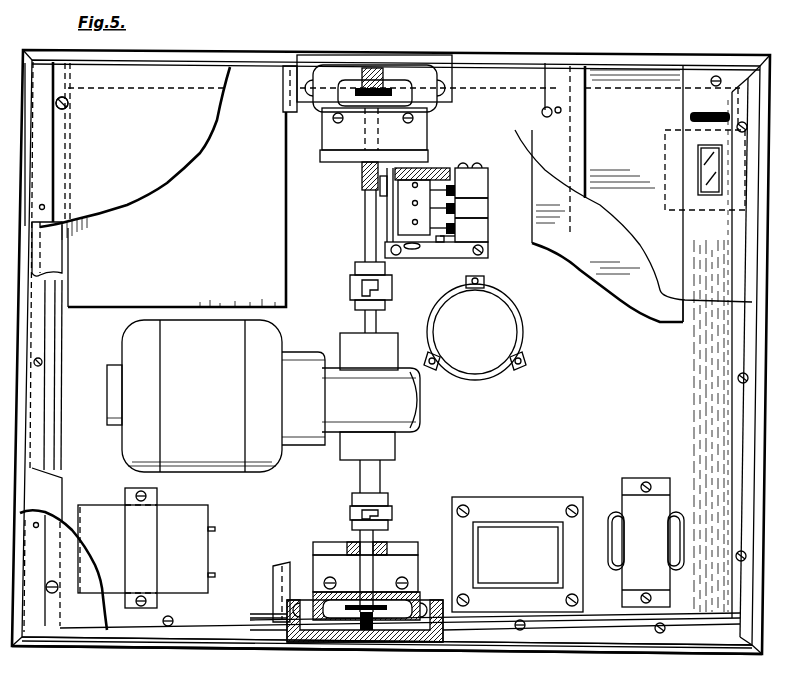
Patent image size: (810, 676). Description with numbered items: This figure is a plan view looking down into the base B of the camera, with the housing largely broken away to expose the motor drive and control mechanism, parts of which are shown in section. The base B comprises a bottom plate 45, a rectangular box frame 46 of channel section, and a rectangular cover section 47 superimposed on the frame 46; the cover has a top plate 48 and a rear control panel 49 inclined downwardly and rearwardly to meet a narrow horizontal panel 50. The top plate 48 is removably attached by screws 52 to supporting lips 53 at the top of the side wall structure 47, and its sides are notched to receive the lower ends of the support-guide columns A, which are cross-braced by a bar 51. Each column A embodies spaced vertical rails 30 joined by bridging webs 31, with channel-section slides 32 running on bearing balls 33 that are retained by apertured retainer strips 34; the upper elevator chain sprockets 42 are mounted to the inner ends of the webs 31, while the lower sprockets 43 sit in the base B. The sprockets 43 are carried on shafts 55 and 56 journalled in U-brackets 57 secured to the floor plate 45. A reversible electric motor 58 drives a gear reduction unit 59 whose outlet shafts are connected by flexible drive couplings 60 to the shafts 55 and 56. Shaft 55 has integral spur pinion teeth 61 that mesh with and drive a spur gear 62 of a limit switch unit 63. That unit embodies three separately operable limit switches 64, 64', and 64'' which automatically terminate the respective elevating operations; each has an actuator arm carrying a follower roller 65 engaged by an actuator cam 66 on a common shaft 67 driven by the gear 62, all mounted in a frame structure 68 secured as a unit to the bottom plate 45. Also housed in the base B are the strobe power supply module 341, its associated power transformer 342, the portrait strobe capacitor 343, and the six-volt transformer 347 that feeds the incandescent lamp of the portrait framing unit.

The vertical rails 30 is at (287, 621).
The bridging webs 31 is at (330, 642).
The slides 32 is at (418, 592).
The bearing balls 33 is at (300, 605).
The retainer strips 34 is at (428, 100).
The sprockets 42 is at (370, 70).
The sprockets 43 is at (348, 600).
The bottom plate 45 is at (391, 352).
The box frame 46 is at (165, 642).
The cover section 47 is at (198, 635).
The top plate 48 is at (127, 151).
The rear control panel 49 is at (633, 192).
The horizontal panel 50 is at (706, 165).
The bar 51 is at (283, 100).
The screws 52 is at (68, 102).
The supporting lips 53 is at (58, 486).
The shaft 55 is at (368, 127).
The shaft 56 is at (373, 572).
The U-brackets 57 is at (340, 156).
The reversible electric motor 58 is at (258, 470).
The gear reduction unit 59 is at (420, 410).
The flexible drive couplings 60 is at (352, 293).
The spur pinion teeth 61 is at (362, 192).
The spur gear 62 is at (440, 168).
The limit switch unit 63 is at (500, 248).
The limit switch 64 is at (458, 210).
The limit switch 64' is at (489, 210).
The limit switch 64'' is at (491, 190).
The follower roller 65 is at (452, 242).
The actuator cam 66 is at (440, 240).
The common shaft 67 is at (412, 250).
The frame structure 68 is at (485, 168).
The strobe power supply module 341 is at (177, 209).
The power transformer 342 is at (517, 554).
The portrait strobe capacitor 343 is at (475, 328).
The 6-volt transformer 347 is at (646, 542).
The support-guide columns A is at (388, 60).
The base B is at (628, 55).